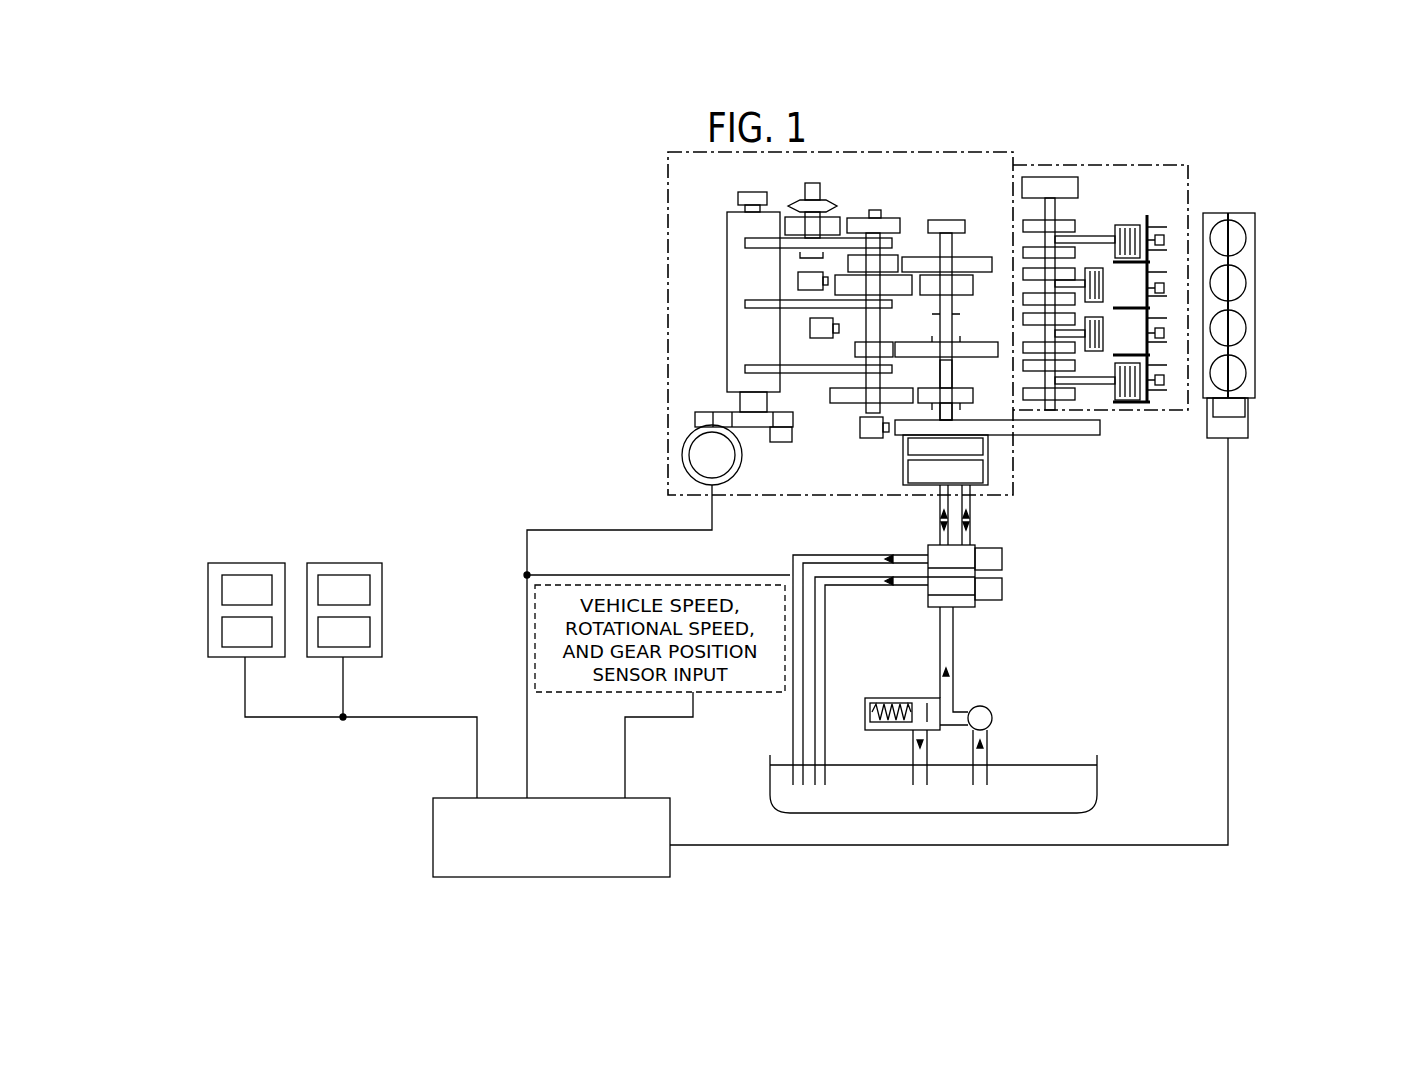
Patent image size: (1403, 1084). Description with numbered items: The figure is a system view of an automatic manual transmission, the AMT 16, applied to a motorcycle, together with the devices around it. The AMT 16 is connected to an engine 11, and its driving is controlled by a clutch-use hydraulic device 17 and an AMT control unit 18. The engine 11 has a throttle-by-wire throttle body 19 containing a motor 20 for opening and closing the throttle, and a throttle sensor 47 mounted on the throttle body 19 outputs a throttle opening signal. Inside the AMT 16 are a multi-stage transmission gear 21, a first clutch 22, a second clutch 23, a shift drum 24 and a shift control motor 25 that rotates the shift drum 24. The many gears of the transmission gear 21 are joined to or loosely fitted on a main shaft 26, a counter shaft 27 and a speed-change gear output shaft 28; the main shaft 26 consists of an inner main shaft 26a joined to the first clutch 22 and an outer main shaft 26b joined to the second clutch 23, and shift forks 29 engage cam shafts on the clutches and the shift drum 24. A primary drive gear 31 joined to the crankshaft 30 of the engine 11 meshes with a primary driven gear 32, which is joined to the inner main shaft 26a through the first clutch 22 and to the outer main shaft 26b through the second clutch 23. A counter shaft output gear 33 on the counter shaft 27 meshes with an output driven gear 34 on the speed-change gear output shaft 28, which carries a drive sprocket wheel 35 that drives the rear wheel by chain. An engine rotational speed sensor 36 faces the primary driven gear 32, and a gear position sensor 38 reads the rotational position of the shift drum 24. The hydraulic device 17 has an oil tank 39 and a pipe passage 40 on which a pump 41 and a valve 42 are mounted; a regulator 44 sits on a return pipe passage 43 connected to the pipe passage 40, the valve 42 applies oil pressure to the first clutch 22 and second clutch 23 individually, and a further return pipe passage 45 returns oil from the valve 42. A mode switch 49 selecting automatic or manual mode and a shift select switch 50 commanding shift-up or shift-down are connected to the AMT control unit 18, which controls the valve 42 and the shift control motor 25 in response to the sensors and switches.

The engine 11 is at (1192, 182).
The automatic manual transmission (AMT) 16 is at (662, 218).
The clutch-use hydraulic device 17 is at (1100, 793).
The AMT control unit 18 is at (658, 798).
The throttle body 19 is at (1256, 228).
The motor 20 is at (1243, 440).
The multi-stage transmission gear 21 is at (808, 456).
The first clutch 22 is at (978, 475).
The second clutch 23 is at (978, 447).
The shift drum 24 is at (735, 226).
The shift control motor 25 is at (683, 456).
The main shaft 26 is at (956, 301).
The inner main shaft 26a is at (960, 410).
The outer main shaft 26b is at (960, 375).
The counter shaft 27 is at (863, 380).
The speed-change gear output shaft 28 is at (800, 255).
The shift forks 29 is at (755, 245).
The crankshaft 30 is at (1063, 413).
The primary drive gear 31 is at (1100, 436).
The primary driven gear 32 is at (900, 436).
The counter shaft output gear 33 is at (895, 218).
The output driven gear 34 is at (838, 218).
The drive sprocket wheel 35 is at (800, 205).
The engine rotational speed sensor 36 is at (860, 428).
The gear position sensor 38 is at (738, 198).
The oil tank 39 is at (770, 780).
The pipe passage 40 is at (955, 673).
The pump 41 is at (993, 717).
The valve 42 is at (1003, 598).
The return pipe passage 43 is at (913, 748).
The regulator 44 is at (868, 694).
The return pipe passage 45 is at (820, 722).
The throttle sensor 47 is at (1246, 406).
The mode switch 49 is at (362, 562).
The shift select switch 50 is at (258, 562).